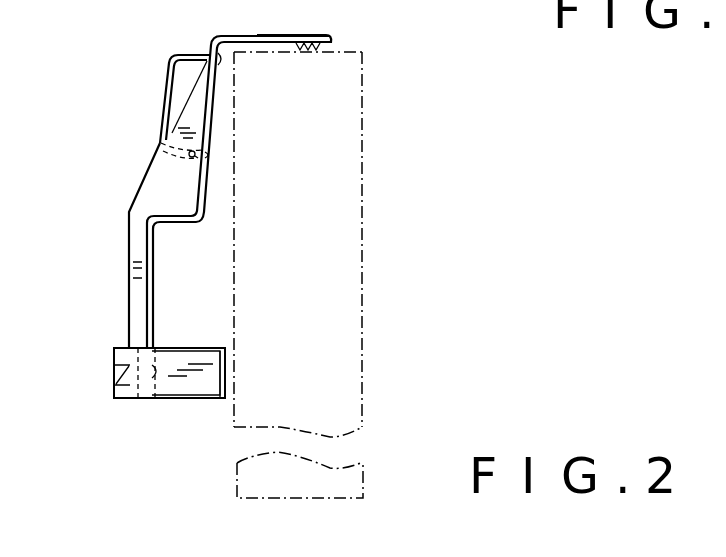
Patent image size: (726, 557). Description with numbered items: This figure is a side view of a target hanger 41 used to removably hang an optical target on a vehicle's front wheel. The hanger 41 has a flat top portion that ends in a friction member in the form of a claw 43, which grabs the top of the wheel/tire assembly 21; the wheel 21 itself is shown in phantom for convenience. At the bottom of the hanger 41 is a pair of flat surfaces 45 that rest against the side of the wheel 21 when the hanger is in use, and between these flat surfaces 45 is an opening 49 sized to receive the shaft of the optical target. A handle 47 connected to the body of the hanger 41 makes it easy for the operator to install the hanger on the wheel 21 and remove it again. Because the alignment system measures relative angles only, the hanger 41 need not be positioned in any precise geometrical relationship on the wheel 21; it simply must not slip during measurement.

The wheel/tire assembly 21 is at (363, 393).
The hanger 41 is at (195, 35).
The claw 43 is at (315, 50).
The flat surfaces 45 is at (234, 369).
The handle 47 is at (168, 60).
The opening 49 is at (104, 369).